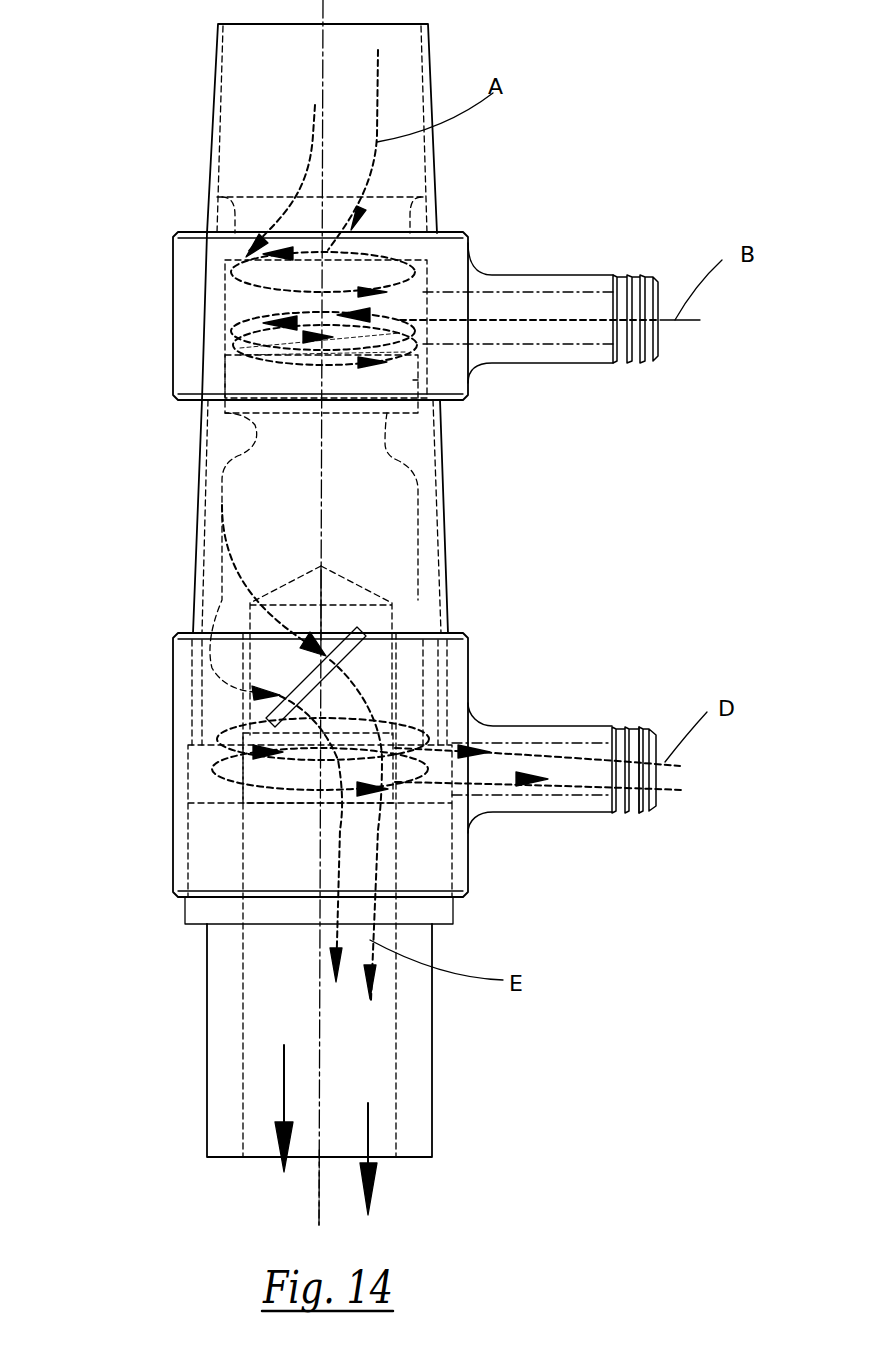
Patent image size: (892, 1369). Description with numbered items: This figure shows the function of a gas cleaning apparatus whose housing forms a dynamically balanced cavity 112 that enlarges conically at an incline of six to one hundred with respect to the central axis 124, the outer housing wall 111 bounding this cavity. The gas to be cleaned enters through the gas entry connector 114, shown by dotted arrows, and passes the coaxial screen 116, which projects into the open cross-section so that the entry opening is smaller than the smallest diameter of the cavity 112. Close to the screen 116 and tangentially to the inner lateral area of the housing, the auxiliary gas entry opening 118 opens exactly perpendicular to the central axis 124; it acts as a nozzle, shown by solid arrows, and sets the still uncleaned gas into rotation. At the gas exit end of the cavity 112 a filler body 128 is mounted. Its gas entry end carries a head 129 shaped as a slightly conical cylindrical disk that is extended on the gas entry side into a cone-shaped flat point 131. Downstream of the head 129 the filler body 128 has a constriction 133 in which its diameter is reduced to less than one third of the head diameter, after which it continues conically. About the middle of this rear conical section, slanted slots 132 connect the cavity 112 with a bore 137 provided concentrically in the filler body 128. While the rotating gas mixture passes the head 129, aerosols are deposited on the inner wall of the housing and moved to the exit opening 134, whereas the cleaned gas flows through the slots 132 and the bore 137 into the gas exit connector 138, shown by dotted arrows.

The outer wall 111 is at (202, 513).
The cavity 112 is at (240, 430).
The gas entry connector 114 is at (392, 61).
The coaxial screen 116 is at (230, 213).
The auxiliary gas entry opening 118 is at (472, 240).
The central axis 124 is at (318, 1183).
The filler body 128 is at (282, 497).
The head 129 is at (415, 380).
The flat point 131 is at (282, 350).
The slanted slots 132 is at (303, 688).
The constriction 133 is at (363, 430).
The exit opening 134 is at (640, 815).
The bore 137 is at (362, 612).
The gas exit connector 138 is at (283, 992).